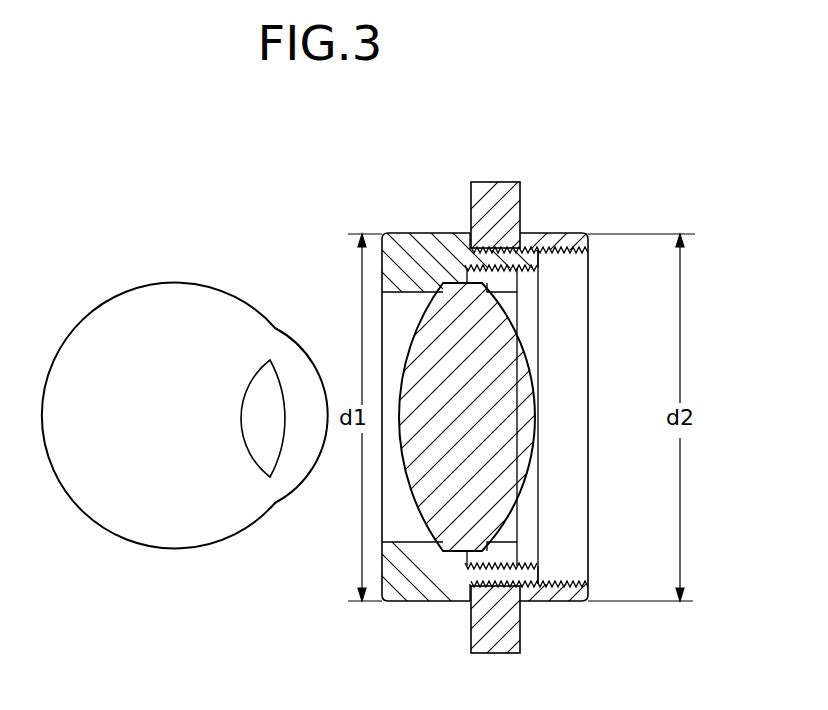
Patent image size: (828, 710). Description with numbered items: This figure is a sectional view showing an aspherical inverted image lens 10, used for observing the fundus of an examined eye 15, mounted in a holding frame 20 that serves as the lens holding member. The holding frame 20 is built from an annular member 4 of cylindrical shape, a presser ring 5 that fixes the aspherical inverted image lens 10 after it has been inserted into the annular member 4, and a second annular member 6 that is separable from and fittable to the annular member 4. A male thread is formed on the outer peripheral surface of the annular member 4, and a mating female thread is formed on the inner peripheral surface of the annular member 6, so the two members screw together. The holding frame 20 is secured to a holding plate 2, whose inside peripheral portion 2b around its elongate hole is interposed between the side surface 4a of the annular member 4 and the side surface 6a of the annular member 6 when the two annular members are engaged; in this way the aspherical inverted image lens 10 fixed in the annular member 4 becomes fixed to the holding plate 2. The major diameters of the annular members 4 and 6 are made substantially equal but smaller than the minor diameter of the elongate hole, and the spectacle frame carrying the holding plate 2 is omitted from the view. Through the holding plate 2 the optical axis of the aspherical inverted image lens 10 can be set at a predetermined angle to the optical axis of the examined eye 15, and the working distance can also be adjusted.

The holding plate 2 is at (495, 182).
The inside peripheral portion 2b is at (470, 247).
The annular member 4 is at (395, 238).
The side surface 4a is at (468, 250).
The presser ring 5 is at (507, 283).
The annular member 6 is at (571, 236).
The side surface 6a is at (540, 245).
The aspherical inverted image lens 10 is at (527, 420).
The examined eye 15 is at (173, 282).
The holding frame 20 is at (548, 110).